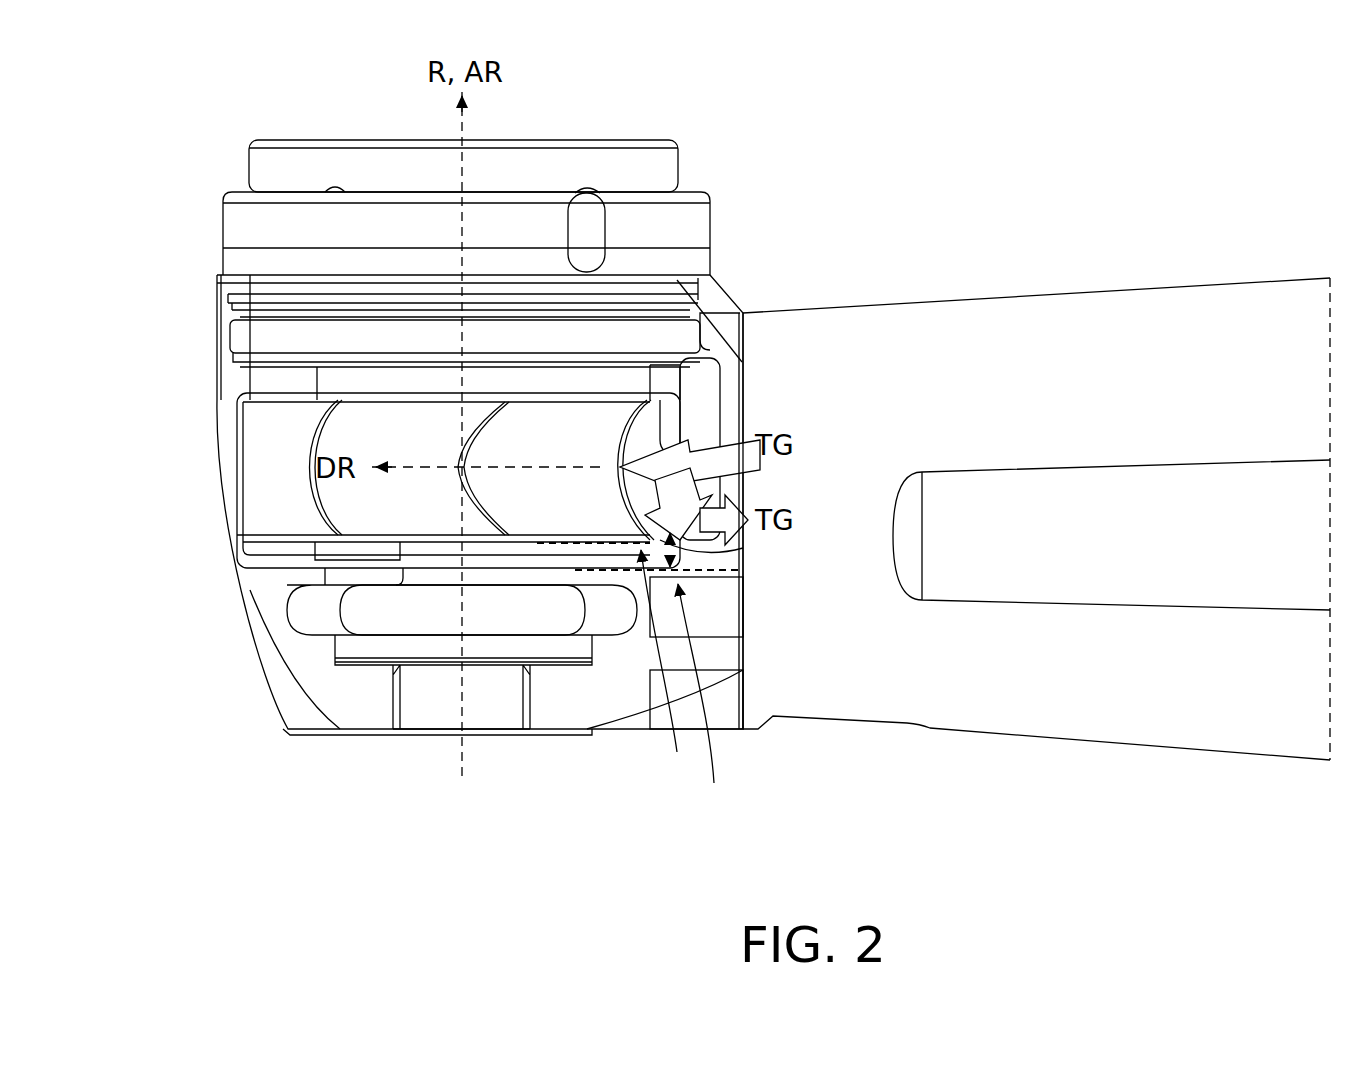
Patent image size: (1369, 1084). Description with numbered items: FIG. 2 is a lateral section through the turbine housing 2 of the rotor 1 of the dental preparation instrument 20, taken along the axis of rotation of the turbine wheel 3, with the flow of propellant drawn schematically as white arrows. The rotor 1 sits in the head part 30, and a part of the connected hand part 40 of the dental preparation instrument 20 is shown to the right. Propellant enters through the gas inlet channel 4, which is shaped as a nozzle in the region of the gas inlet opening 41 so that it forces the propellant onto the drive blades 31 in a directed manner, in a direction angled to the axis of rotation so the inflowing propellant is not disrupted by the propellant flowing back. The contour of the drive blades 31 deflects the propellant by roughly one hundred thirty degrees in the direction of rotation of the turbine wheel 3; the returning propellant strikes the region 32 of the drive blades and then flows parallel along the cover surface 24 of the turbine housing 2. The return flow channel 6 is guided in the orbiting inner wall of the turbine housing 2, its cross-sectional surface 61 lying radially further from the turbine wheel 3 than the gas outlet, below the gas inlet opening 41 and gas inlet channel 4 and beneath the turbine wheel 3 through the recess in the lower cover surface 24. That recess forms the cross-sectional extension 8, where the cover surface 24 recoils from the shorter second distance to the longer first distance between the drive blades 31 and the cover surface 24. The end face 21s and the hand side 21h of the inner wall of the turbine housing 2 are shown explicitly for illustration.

The rotor 1 is at (773, 417).
The dental preparation instrument 20 is at (1017, 158).
The turbine housing 2 is at (428, 381).
The turbine wheel 3 is at (382, 520).
The gas inlet channel 4 is at (758, 389).
The gas inlet opening 41 is at (706, 426).
The return flow channel 6 is at (749, 664).
The cross-sectional surface of the return flow channel 61 is at (713, 550).
The cross-sectional extension 8 is at (731, 815).
The hand side of the inner wall 21h is at (748, 405).
The end face of the inner wall 21s is at (232, 516).
The cover surface 24 is at (707, 348).
The head part of the preparation instrument 30 is at (572, 130).
The drive blades 31 is at (692, 332).
The region of the drive blade struck by the returning propellant 32 is at (601, 438).
The hand part of the preparation instrument 40 is at (1157, 315).